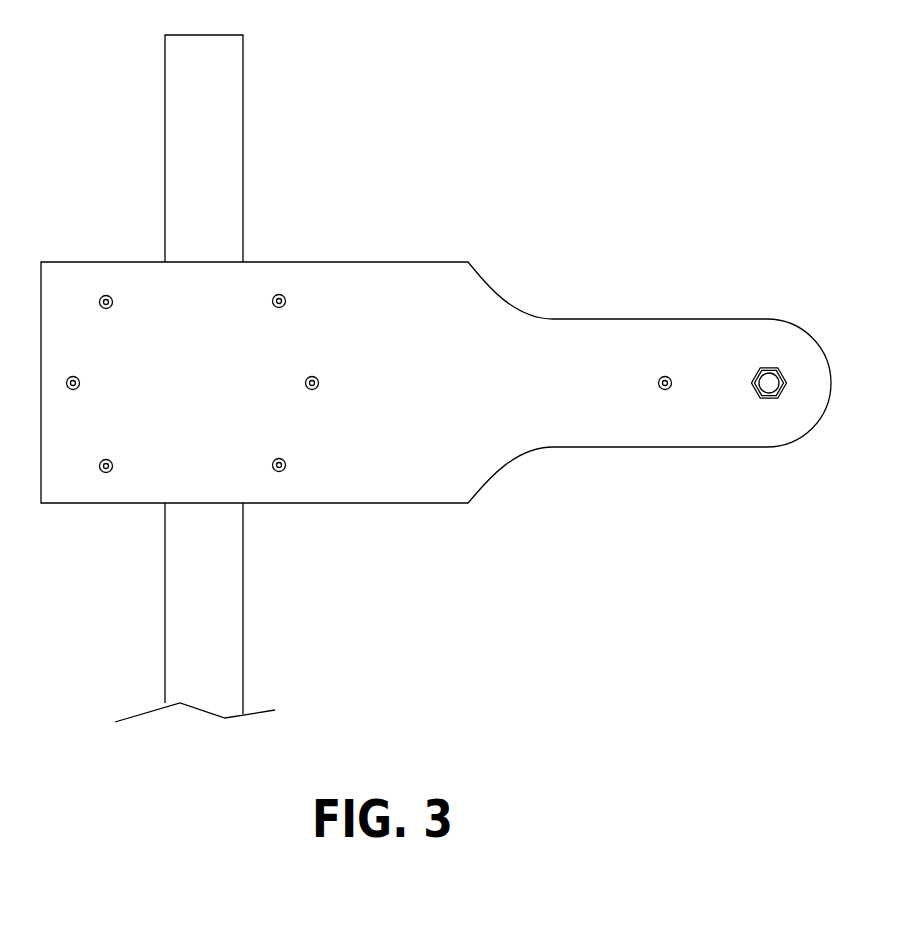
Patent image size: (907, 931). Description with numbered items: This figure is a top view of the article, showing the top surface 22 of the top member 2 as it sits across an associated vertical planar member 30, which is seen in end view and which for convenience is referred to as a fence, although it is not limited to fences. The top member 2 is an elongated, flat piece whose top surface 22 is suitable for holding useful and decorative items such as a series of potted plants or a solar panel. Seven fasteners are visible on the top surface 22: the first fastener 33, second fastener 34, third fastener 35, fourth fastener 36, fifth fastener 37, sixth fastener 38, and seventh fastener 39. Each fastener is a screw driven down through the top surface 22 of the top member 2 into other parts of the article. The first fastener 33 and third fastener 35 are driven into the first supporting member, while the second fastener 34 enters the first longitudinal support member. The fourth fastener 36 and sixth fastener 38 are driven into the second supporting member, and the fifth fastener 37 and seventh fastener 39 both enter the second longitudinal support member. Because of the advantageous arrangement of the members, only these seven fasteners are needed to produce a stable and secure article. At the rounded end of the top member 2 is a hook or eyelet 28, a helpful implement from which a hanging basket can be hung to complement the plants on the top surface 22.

The top member 2 is at (695, 340).
The top surface 22 is at (478, 352).
The hook or eyelet 28 is at (770, 365).
The associated vertical planar member 30 is at (227, 90).
The first fastener 33 is at (110, 308).
The second fastener 34 is at (80, 383).
The third fastener 35 is at (112, 462).
The fourth fastener 36 is at (286, 300).
The fifth fastener 37 is at (319, 383).
The sixth fastener 38 is at (283, 460).
The seventh fastener 39 is at (658, 385).